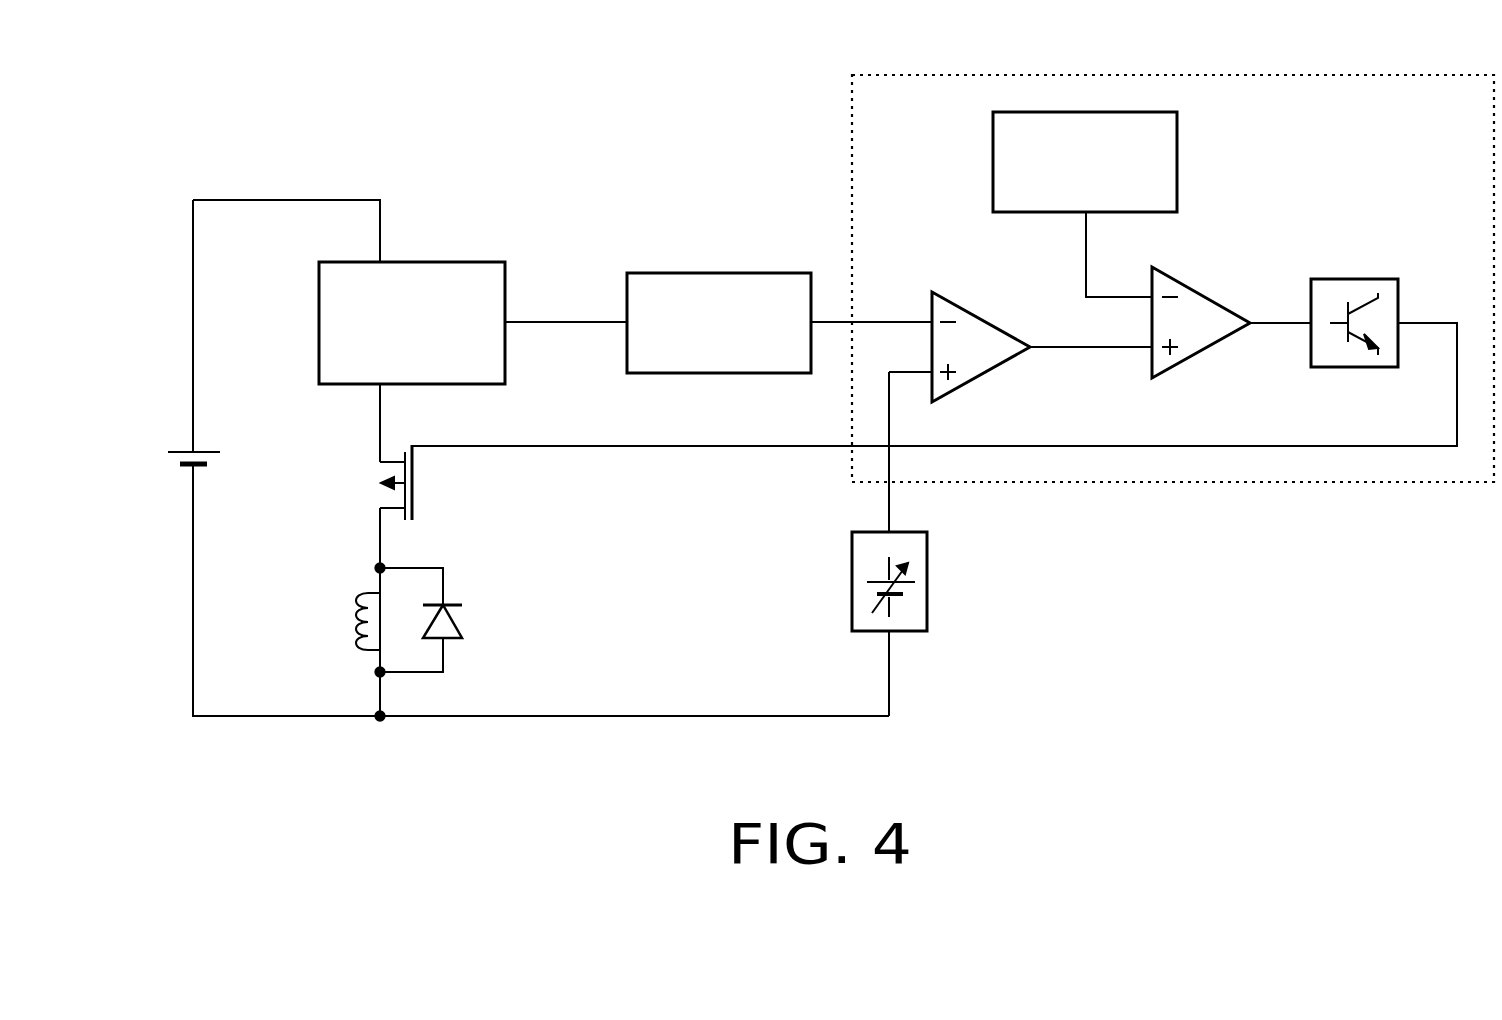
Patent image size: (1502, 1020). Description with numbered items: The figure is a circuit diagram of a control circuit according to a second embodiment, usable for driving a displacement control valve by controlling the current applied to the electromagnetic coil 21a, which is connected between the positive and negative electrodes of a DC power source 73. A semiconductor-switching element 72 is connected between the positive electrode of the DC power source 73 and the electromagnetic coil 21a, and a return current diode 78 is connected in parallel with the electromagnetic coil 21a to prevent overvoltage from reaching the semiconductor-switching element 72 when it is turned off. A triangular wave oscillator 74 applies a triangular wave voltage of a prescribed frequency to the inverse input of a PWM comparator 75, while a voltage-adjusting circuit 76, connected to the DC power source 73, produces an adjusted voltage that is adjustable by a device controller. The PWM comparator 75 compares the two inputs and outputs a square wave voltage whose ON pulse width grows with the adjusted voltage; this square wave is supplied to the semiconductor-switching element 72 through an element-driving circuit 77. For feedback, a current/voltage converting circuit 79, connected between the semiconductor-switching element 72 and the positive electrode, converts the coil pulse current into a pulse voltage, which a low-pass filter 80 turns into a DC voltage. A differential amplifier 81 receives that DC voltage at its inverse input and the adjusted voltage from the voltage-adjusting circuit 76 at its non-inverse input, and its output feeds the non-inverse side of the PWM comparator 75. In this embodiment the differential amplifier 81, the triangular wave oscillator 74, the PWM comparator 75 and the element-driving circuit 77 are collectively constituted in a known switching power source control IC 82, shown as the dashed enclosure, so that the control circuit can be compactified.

The electromagnetic coil 21a is at (354, 618).
The semiconductor-switching element 72 is at (378, 486).
The DC power source 73 is at (190, 452).
The triangular wave oscillator 74 is at (1178, 157).
The PWM comparator 75 is at (1198, 292).
The voltage-adjusting circuit 76 is at (929, 579).
The element-driving circuit 77 is at (1352, 279).
The return current diode 78 is at (462, 616).
The current/voltage converting circuit 79 is at (441, 262).
The low-pass filter 80 is at (717, 273).
The differential amplifier 81 is at (978, 317).
The switching power source control IC 82 is at (1180, 483).